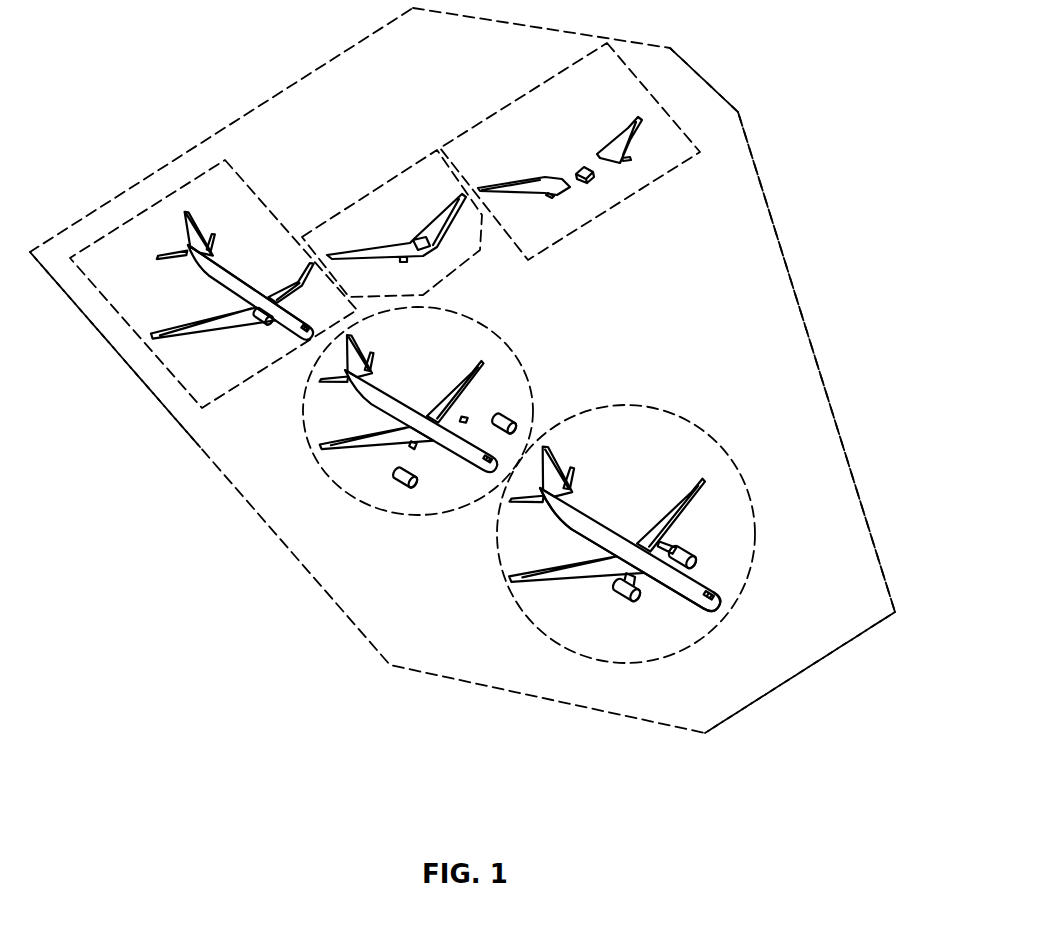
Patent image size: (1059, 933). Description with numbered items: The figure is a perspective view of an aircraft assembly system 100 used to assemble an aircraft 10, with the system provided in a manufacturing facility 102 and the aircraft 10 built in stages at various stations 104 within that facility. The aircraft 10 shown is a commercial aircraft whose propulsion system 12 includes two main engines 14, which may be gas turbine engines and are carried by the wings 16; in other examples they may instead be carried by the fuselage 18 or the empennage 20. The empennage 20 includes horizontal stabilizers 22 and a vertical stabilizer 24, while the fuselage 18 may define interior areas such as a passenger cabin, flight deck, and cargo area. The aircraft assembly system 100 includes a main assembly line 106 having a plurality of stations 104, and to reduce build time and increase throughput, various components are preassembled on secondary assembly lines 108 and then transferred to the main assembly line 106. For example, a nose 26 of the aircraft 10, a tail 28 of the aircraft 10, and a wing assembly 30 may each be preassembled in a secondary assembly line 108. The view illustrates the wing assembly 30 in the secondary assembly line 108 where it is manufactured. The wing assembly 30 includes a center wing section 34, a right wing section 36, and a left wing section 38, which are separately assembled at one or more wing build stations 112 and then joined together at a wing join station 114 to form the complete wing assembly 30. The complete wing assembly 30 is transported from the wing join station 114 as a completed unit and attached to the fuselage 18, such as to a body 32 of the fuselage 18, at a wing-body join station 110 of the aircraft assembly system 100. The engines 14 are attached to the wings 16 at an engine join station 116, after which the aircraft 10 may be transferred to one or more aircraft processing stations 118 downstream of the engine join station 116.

The aircraft 10 is at (726, 513).
The propulsion system 12 is at (676, 553).
The main engines 14 is at (629, 586).
The wings 16 is at (671, 512).
The fuselage 18 is at (285, 328).
The empennage 20 is at (555, 508).
The horizontal stabilizers 22 is at (545, 487).
The vertical stabilizer 24 is at (555, 474).
The nose 26 is at (710, 602).
The tail 28 is at (594, 543).
The wing assembly 30 is at (220, 345).
The body 32 is at (217, 276).
The center wing section 34 is at (596, 173).
The right wing section 36 is at (543, 192).
The left wing section 38 is at (637, 135).
The aircraft assembly system 100 is at (745, 272).
The manufacturing facility 102 is at (857, 328).
The stations 104 is at (762, 620).
The main assembly line 106 is at (131, 212).
The secondary assembly line 108 is at (667, 100).
The wing-body join station 110 is at (89, 282).
The wing build stations 112 is at (745, 112).
The wing join station 114 is at (402, 172).
The engine join station 116 is at (330, 473).
The aircraft processing stations 118 is at (684, 428).